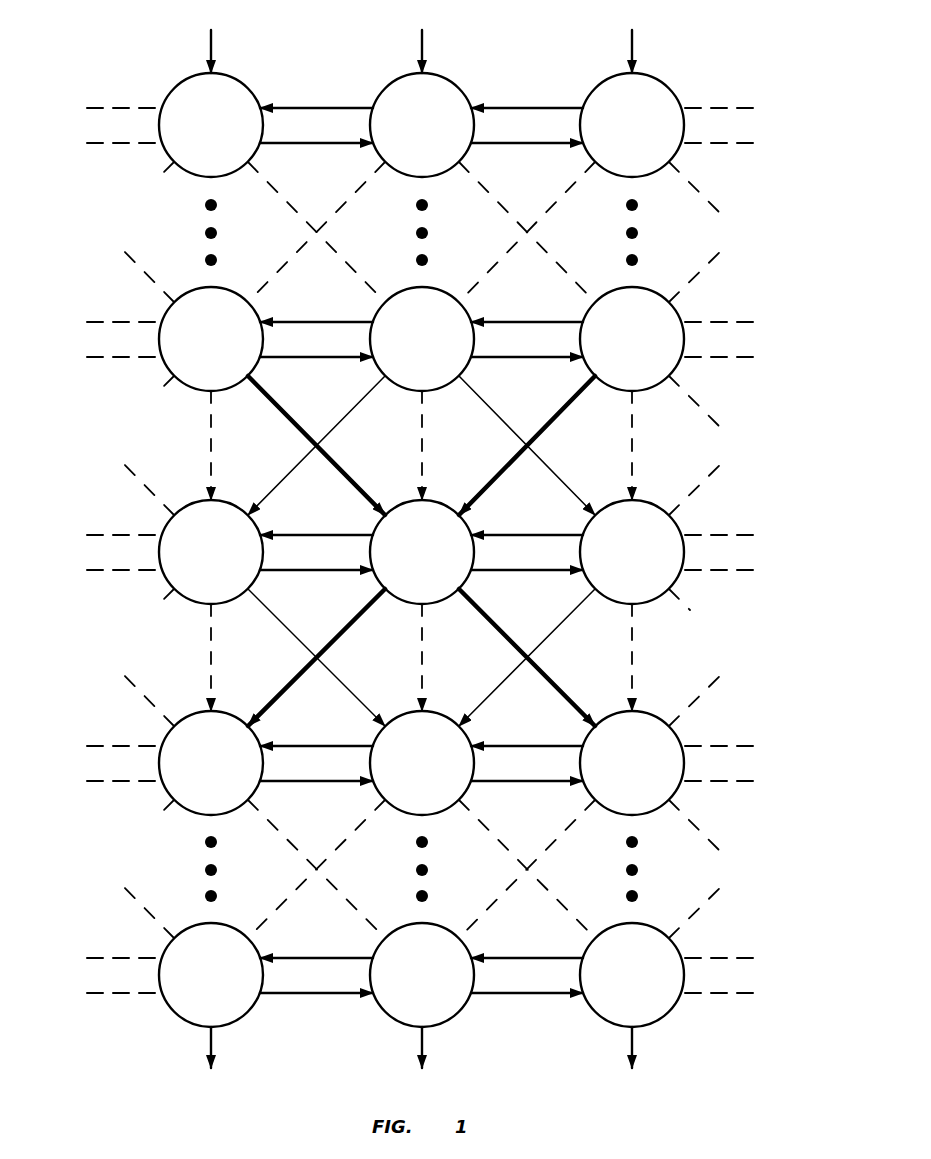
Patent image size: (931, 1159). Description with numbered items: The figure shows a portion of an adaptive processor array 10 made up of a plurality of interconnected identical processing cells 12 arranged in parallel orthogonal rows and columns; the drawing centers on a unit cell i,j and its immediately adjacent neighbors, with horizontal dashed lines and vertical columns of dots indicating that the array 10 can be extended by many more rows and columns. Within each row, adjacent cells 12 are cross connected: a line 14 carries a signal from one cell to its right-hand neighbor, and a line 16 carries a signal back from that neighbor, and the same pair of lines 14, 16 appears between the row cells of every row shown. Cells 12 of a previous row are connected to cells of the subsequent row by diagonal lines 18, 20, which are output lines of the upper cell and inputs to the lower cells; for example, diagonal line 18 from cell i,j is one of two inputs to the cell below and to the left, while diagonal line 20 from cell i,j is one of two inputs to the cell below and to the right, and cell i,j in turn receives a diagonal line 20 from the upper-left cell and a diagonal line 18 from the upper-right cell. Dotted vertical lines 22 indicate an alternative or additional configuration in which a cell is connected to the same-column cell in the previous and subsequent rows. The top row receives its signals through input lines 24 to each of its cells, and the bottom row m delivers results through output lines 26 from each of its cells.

The adaptive processor array 10 is at (74, 106).
The processing cell 12 is at (240, 81).
The line 14 is at (126, 128).
The line 16 is at (118, 106).
The diagonal line 18 is at (140, 194).
The diagonal line 20 is at (280, 192).
The dotted line 22 is at (211, 428).
The input line 24 is at (213, 45).
The output line 26 is at (210, 1043).